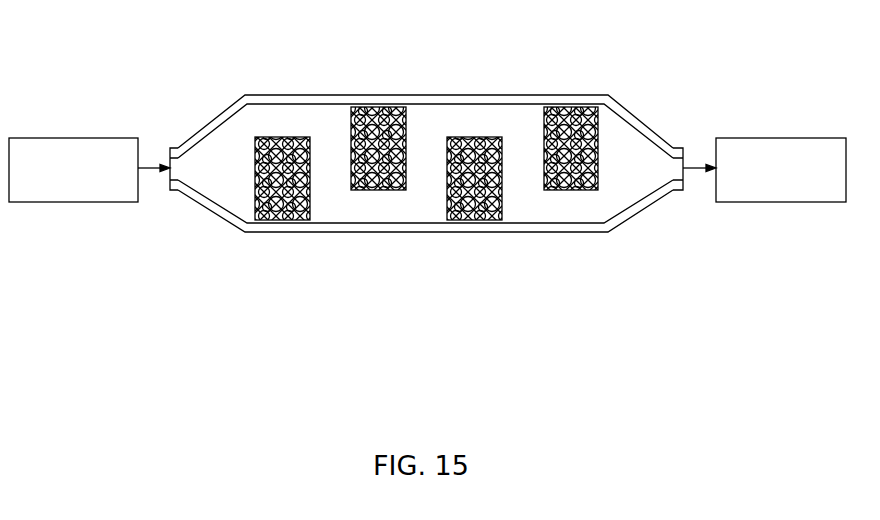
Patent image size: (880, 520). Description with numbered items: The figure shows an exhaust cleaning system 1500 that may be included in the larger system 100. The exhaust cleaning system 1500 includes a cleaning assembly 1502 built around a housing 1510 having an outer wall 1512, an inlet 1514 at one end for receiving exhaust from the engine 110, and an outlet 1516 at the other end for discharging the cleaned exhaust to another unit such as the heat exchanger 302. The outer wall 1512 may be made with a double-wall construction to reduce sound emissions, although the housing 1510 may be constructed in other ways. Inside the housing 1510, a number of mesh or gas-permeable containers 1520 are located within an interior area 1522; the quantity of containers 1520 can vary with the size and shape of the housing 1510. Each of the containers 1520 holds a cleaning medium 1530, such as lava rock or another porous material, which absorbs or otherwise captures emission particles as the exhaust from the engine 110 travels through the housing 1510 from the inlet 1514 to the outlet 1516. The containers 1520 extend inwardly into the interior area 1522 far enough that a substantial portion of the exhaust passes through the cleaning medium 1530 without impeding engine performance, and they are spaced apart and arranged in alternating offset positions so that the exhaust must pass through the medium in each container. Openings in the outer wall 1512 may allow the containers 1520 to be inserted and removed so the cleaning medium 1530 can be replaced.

The system 100 is at (603, 378).
The engine 110 is at (74, 138).
The heat exchanger 302 is at (779, 138).
The exhaust cleaning system 1500 is at (253, 325).
The cleaning assembly 1502 is at (210, 249).
The housing 1510 is at (262, 84).
The outer wall 1512 is at (320, 94).
The inlet 1514 is at (168, 182).
The outlet 1516 is at (684, 150).
The mesh or gas-permeable containers 1520 is at (403, 147).
The interior area 1522 is at (598, 200).
The cleaning medium 1530 is at (580, 107).